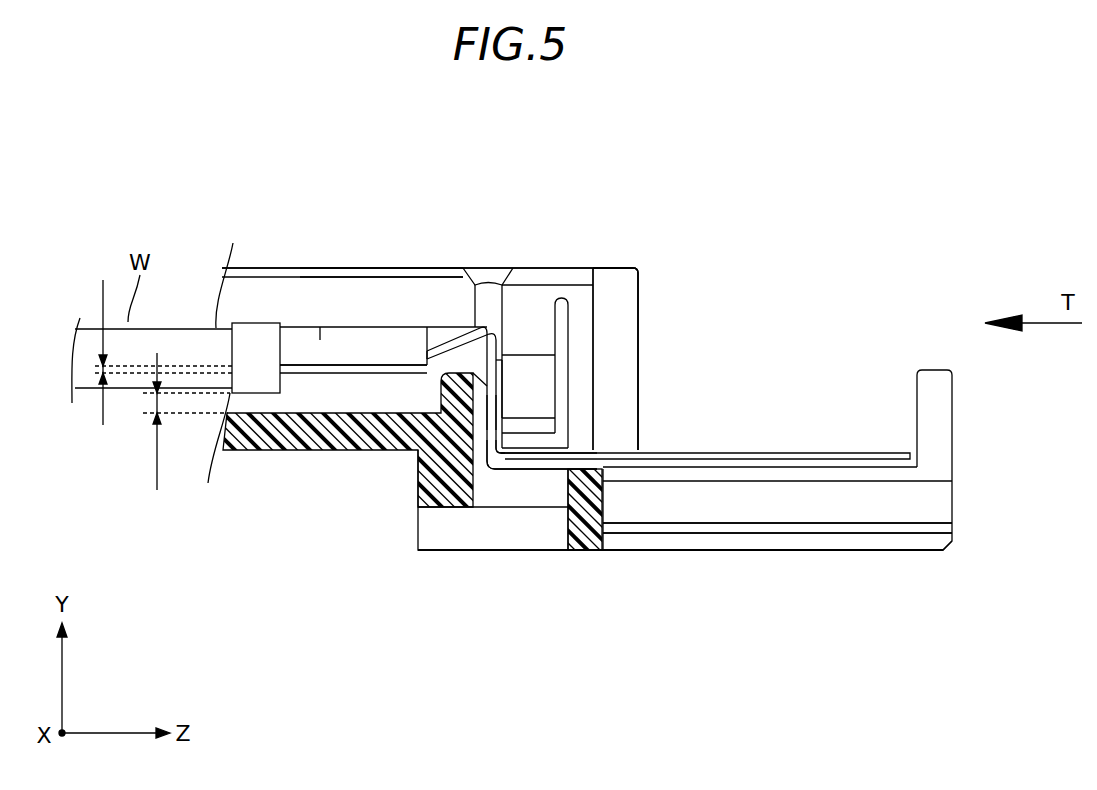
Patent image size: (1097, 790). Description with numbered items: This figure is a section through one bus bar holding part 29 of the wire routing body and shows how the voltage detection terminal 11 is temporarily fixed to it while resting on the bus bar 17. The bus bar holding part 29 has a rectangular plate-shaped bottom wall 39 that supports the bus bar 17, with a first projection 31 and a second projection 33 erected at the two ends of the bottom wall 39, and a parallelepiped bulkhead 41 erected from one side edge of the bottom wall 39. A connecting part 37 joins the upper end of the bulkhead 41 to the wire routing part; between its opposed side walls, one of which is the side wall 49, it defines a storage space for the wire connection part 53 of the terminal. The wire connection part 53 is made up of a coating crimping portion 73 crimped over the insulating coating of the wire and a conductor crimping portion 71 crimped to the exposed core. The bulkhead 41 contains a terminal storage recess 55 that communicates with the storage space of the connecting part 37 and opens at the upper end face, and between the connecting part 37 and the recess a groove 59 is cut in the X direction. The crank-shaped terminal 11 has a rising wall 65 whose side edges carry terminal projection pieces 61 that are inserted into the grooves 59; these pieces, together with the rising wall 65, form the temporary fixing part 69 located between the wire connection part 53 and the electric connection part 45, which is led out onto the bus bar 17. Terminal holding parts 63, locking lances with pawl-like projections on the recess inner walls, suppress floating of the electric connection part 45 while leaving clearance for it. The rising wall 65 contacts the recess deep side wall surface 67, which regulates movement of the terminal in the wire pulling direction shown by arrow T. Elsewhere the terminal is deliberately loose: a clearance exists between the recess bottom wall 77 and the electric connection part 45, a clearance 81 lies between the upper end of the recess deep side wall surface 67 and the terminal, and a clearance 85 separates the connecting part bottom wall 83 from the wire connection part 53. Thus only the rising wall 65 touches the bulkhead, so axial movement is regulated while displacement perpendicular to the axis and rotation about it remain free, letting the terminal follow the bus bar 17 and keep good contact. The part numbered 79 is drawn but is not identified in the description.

The voltage detection terminal 11 is at (420, 313).
The bus bar 17 is at (598, 530).
The bus bar holding part 29 is at (660, 248).
The first projection 31 is at (915, 396).
The second projection 33 is at (640, 282).
The connecting part 37 is at (248, 269).
The bottom wall 39 is at (840, 552).
The bulkhead 41 is at (588, 302).
The electric connection part 45 is at (750, 461).
The side wall 49 is at (368, 291).
The wire connection part 53 is at (347, 142).
The terminal storage recess 55 is at (523, 300).
The groove 59 is at (487, 278).
The terminal projection piece 61 is at (492, 476).
The terminal holding part 63 is at (550, 390).
The rising wall 65 is at (510, 377).
The recess deep side wall surface 67 is at (497, 402).
The temporary fixing part 69 is at (517, 380).
The conductor crimping portion 71 is at (343, 327).
The coating crimping portion 73 is at (254, 323).
The recess bottom wall 77 is at (522, 507).
The fixing wall 79 is at (580, 488).
The clearance 81 is at (258, 366).
The connecting part bottom wall 83 is at (340, 413).
The clearance 85 is at (186, 437).